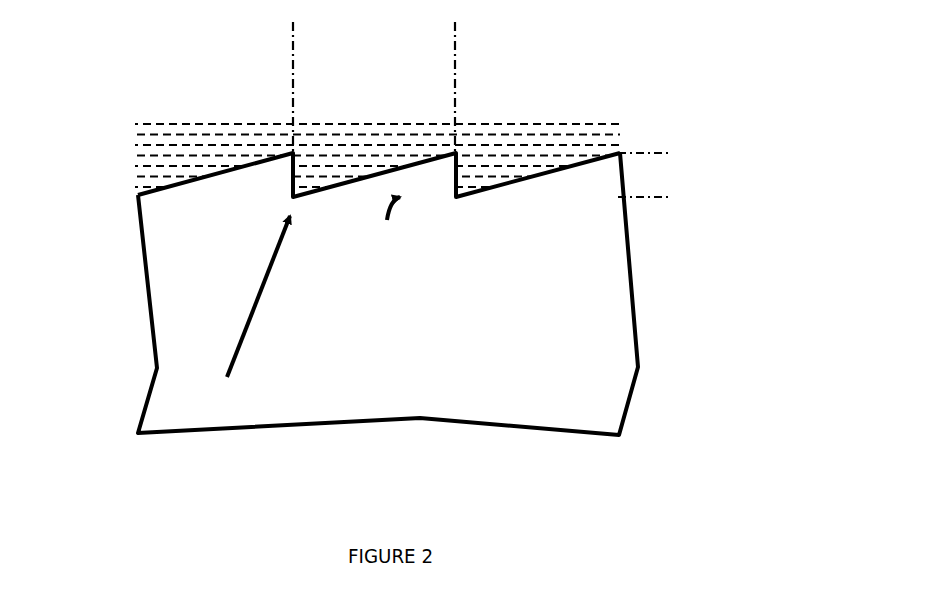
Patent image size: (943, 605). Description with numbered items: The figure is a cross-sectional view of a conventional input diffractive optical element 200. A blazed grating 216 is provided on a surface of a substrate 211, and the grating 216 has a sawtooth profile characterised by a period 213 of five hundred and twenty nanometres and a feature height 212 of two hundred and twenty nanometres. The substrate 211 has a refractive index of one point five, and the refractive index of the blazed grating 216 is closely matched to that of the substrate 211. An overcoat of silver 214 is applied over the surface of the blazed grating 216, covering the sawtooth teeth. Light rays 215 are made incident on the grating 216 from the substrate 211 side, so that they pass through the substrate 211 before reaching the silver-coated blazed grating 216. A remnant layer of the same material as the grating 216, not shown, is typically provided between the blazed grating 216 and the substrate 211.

The input diffractive optical element 200 is at (697, 265).
The substrate 211 is at (150, 232).
The feature height 212 is at (653, 160).
The period 213 is at (446, 43).
The overcoat of silver 214 is at (158, 123).
The light rays 215 is at (220, 360).
The blazed grating 216 is at (386, 233).